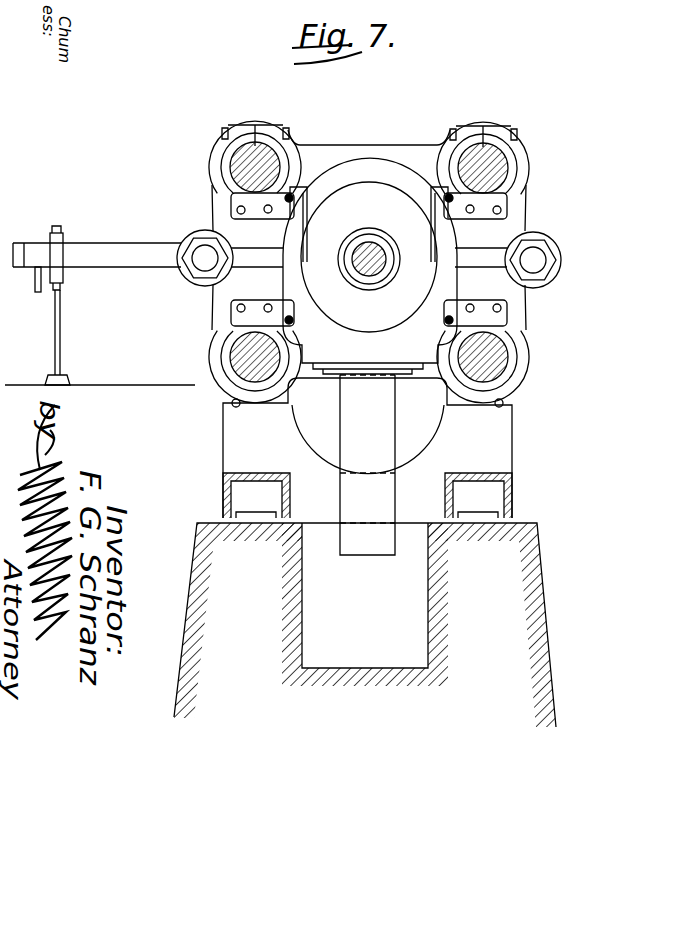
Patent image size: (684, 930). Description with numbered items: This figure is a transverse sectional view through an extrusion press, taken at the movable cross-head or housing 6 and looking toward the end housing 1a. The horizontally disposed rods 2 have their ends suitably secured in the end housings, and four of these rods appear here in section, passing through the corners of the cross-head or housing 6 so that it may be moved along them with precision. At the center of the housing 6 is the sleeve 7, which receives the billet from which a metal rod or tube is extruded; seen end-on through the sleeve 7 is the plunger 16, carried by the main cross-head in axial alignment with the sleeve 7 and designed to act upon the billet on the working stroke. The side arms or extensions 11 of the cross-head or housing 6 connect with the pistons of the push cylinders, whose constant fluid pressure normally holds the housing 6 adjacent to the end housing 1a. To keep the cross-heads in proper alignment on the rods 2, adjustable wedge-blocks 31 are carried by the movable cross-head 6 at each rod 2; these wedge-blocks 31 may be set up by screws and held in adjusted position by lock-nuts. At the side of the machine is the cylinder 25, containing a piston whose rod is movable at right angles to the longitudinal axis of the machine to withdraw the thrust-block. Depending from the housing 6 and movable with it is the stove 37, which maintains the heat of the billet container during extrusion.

The end housing 1a is at (408, 152).
The rods 2 is at (245, 172).
The movable cross-head or housing 6 is at (369, 257).
The sleeve 7 is at (380, 250).
The side arms or extensions 11 is at (368, 357).
The plunger 16 is at (380, 270).
The cylinder 25 is at (100, 252).
The adjustable wedge-blocks 31 is at (369, 259).
The stove 37 is at (367, 465).